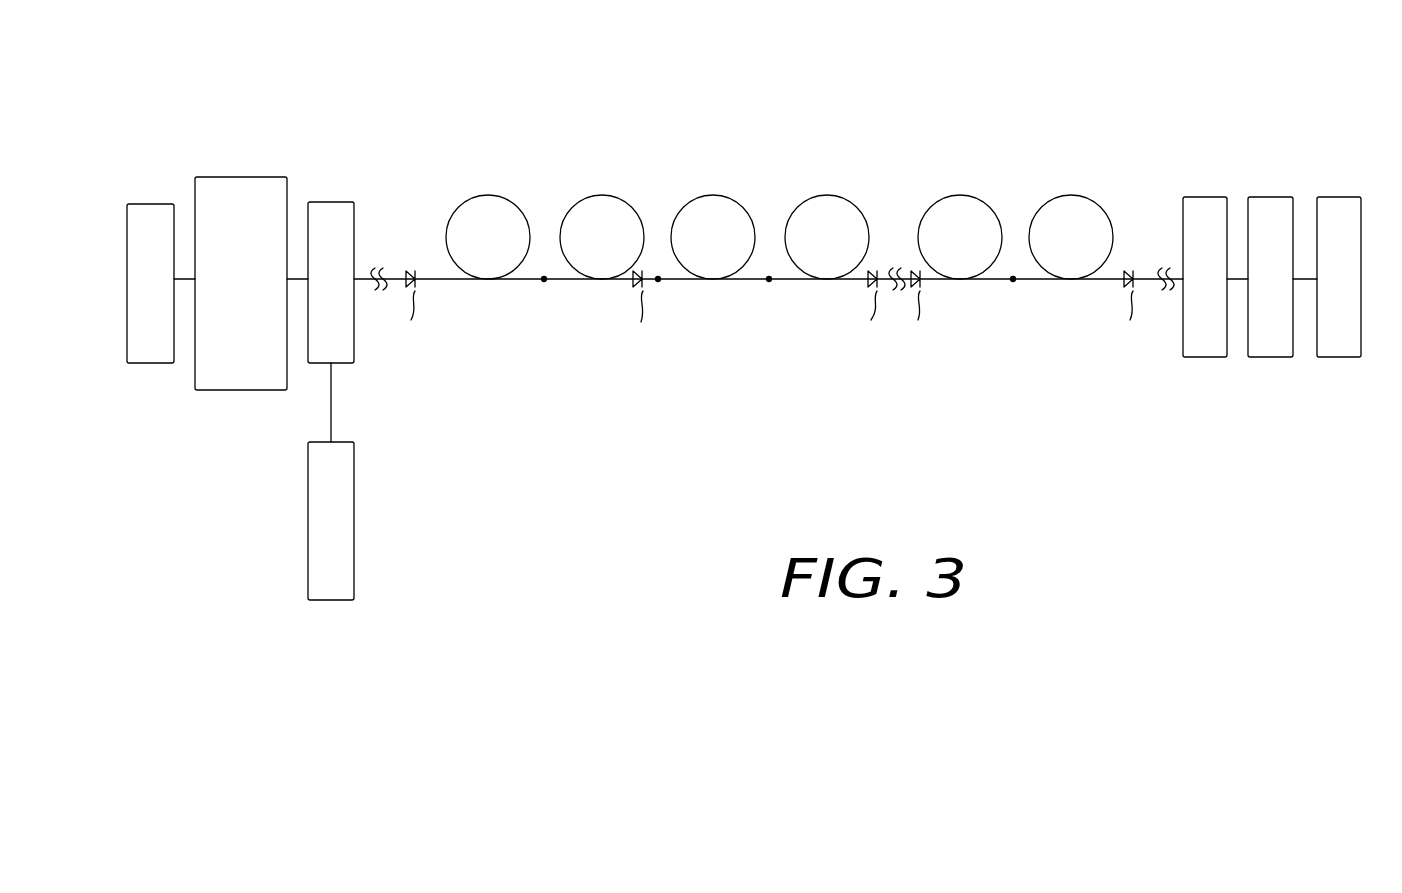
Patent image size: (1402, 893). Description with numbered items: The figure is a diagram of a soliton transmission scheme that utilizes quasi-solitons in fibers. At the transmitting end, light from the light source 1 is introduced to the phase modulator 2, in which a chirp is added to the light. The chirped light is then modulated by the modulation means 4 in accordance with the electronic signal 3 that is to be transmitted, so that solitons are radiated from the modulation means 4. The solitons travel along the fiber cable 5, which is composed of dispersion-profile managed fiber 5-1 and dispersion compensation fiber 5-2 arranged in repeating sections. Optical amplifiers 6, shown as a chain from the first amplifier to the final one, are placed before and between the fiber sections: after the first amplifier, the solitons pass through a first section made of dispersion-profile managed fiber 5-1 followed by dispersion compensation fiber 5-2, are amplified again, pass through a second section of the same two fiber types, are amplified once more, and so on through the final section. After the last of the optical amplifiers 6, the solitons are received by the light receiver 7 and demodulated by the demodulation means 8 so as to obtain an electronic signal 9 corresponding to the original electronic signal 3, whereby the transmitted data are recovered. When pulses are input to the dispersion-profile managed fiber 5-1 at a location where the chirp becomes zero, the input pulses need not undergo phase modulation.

The light source 1 is at (150, 205).
The phase modulator 2 is at (240, 177).
The electronic signal 3 is at (354, 520).
The modulation means 4 is at (330, 202).
The fiber cable 5 is at (749, 69).
The dispersion-profile managed fiber 5-1 is at (964, 157).
The dispersion compensation fiber 5-2 is at (1075, 157).
The optical amplifiers 6 is at (643, 345).
The light receiver 7 is at (1202, 357).
The demodulation means 8 is at (1270, 197).
The electronic signal 9 is at (1340, 357).